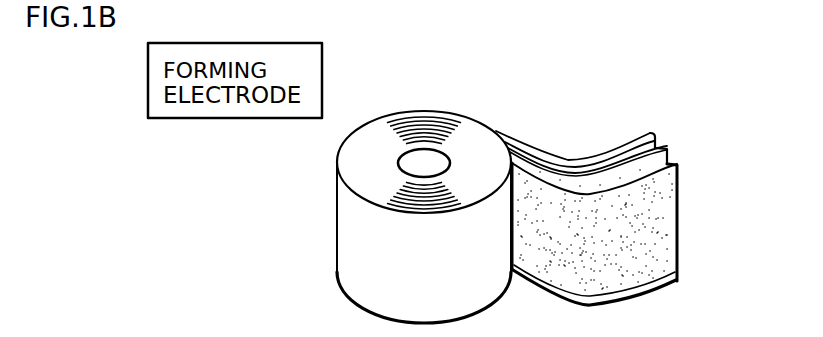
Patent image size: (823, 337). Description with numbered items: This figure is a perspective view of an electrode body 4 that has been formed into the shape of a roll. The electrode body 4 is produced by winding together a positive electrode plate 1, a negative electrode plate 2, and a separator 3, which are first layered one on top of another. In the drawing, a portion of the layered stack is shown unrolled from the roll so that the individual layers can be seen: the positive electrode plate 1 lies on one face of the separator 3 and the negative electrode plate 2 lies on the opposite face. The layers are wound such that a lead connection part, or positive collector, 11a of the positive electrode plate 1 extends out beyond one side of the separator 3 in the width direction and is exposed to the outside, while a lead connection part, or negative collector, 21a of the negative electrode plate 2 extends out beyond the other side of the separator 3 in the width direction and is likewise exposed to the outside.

The electrode body 4 is at (490, 86).
The lead connection part (positive collector) 11a is at (648, 132).
The positive electrode plate 1 is at (659, 134).
The separator 3 is at (669, 149).
The negative electrode plate 2 is at (679, 170).
The lead connection part (negative collector) 21a is at (668, 282).